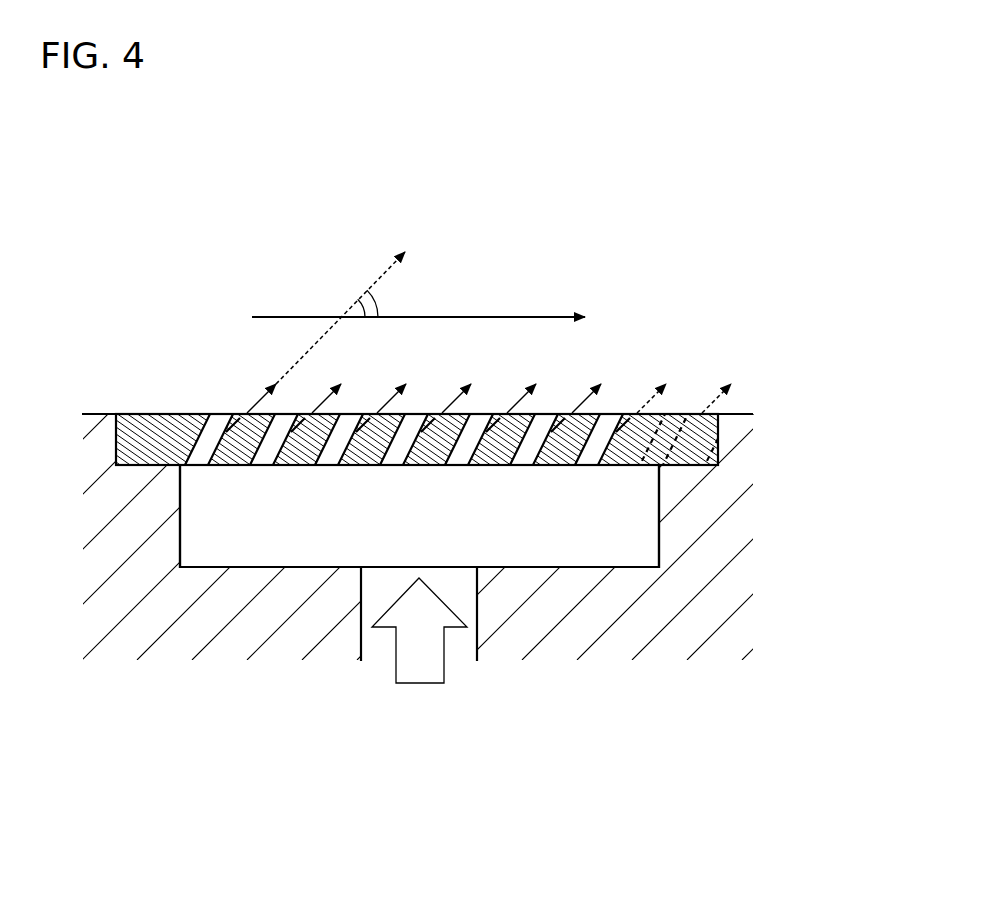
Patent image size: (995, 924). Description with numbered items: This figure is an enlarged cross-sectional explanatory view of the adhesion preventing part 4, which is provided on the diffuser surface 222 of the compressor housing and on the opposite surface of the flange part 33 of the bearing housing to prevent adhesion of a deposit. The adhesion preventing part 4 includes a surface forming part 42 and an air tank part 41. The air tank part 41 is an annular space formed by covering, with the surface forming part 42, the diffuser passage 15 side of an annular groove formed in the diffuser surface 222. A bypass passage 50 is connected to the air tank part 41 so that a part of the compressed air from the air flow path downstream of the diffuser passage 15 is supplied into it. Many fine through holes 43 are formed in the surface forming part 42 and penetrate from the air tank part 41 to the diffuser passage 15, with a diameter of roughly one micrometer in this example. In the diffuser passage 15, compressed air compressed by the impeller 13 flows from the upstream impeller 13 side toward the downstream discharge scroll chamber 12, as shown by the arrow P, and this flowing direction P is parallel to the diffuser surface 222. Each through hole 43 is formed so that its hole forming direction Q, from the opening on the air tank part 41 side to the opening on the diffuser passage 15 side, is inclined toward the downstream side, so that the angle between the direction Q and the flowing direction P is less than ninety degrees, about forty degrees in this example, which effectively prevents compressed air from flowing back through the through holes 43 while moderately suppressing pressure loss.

The adhesion preventing part 4 is at (497, 441).
The discharge scroll chamber 12 is at (788, 312).
The impeller 13 is at (311, 299).
The diffuser passage 15 is at (312, 205).
The flange part 33 is at (660, 652).
The air tank part 41 is at (635, 505).
The surface forming part 42 is at (473, 441).
The through holes 43 is at (213, 443).
The bypass passage 50 is at (377, 653).
The diffuser surface 222 is at (102, 414).
The compressed air flowing direction P is at (267, 317).
The hole forming direction Q is at (416, 237).